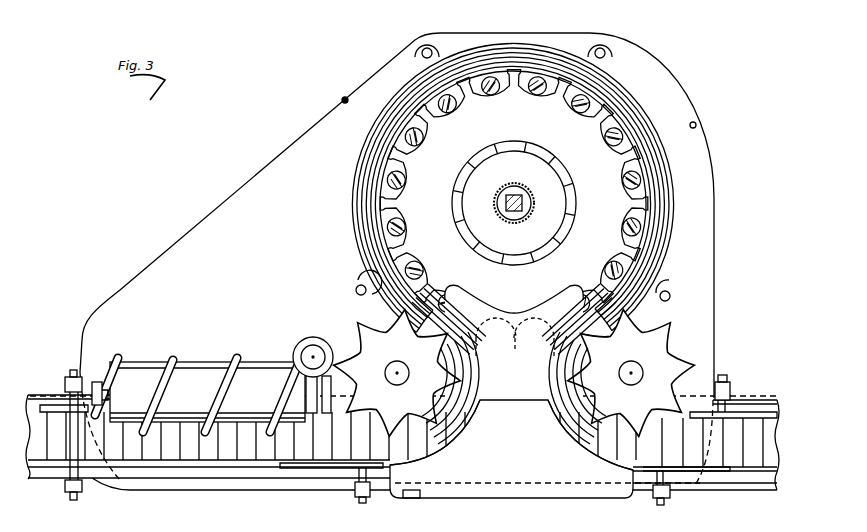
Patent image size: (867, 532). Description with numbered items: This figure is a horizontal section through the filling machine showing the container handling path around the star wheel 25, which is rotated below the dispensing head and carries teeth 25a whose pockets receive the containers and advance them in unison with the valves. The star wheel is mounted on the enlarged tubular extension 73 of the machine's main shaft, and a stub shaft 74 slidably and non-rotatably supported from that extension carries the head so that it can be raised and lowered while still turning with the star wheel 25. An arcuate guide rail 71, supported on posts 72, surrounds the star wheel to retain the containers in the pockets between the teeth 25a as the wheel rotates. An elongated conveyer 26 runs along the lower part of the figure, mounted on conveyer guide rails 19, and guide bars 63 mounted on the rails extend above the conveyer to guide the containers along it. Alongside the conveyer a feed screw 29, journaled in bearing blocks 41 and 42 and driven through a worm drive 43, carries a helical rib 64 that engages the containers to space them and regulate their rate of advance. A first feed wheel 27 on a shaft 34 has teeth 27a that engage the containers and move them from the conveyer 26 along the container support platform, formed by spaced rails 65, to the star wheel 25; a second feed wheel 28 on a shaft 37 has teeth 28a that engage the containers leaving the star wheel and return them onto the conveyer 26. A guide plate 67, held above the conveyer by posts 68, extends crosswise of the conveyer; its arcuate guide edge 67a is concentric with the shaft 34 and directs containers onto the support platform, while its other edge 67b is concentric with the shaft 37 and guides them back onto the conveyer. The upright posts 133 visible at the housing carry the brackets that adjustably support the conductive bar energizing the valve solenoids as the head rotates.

The upright post 133 is at (342, 101).
The conveyer guide rails 19 is at (770, 483).
The star wheel 25 is at (594, 127).
The teeth of the star wheel 25a is at (468, 80).
The tubular extension 73 is at (528, 212).
The stub shaft 74 is at (518, 198).
The arcuate guide rail 71 is at (347, 219).
The posts 72 is at (358, 284).
The spaced rails 65 is at (470, 412).
The feed wheel 27 is at (350, 332).
The teeth of the feed wheel 27a is at (342, 354).
The shaft 34 is at (397, 385).
The feed wheel 28 is at (674, 332).
The teeth of the feed wheel 28a is at (582, 344).
The shaft 37 is at (634, 384).
The guide plate 67 is at (484, 476).
The arcuate guide edge 67a is at (445, 450).
The other edge of the guide plate 67b is at (580, 446).
The posts 68 is at (412, 498).
The feed screw 29 is at (211, 356).
The helical rib 64 is at (172, 357).
The bearing block 41 is at (97, 381).
The bearing block 42 is at (310, 414).
The worm drive 43 is at (312, 336).
The conveyer 26 is at (62, 484).
The guide bars 63 is at (733, 483).